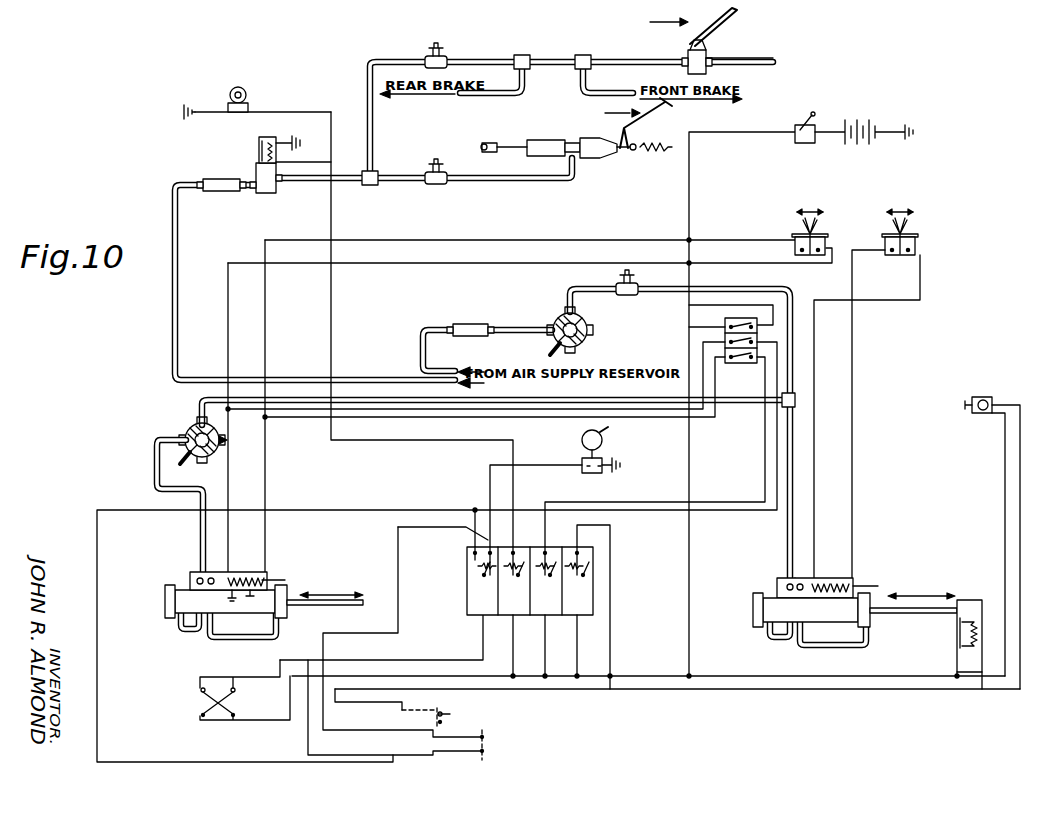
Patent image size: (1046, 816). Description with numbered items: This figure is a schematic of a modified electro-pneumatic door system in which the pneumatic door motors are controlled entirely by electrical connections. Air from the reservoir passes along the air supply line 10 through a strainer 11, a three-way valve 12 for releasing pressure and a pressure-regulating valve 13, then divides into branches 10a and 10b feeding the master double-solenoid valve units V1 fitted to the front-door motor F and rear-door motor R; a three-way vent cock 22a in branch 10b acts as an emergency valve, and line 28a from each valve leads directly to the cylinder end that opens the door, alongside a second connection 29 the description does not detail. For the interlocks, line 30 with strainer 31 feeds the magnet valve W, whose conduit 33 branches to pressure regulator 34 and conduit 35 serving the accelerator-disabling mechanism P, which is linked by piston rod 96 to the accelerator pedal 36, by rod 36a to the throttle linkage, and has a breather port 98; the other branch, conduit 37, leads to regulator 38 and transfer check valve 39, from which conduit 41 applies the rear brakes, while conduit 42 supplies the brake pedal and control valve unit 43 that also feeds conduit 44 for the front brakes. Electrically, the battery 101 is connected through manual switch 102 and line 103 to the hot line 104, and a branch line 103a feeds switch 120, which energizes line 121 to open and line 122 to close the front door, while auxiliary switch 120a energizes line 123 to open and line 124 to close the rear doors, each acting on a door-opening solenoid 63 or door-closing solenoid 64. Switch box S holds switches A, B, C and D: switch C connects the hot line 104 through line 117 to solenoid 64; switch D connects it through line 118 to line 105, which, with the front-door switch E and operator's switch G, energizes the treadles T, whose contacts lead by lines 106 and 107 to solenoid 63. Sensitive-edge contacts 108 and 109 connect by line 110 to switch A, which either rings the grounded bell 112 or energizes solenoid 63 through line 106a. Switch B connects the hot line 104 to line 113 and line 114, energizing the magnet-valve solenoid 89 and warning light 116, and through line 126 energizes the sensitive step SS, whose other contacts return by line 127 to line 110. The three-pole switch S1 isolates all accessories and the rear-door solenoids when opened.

The air supply line 10 is at (423, 344).
The branch line 10a is at (806, 464).
The branch line 10b is at (548, 414).
The strainer 11 is at (490, 326).
The three-way valve 12 is at (588, 345).
The pressure-regulating valve 13 is at (627, 297).
The three-way vent cock 22a is at (182, 424).
The line 28a is at (237, 636).
The pipe loop 29 is at (178, 632).
The line 30 is at (174, 278).
The strainer 31 is at (216, 178).
The conduit 33 is at (370, 187).
The pressure regulator 34 is at (436, 189).
The conduit 35 is at (544, 190).
The accelerator pedal 36 is at (662, 108).
The rod 36a is at (484, 150).
The conduit 37 is at (254, 166).
The regulator 38 is at (429, 48).
The transfer check valve 39 is at (523, 54).
The conduit 41 is at (523, 88).
The conduit 42 is at (740, 58).
The brake pedal and control valve unit 43 is at (732, 18).
The conduit 44 is at (593, 83).
The door-opening solenoid 63 is at (228, 572).
The door-closing solenoid 64 is at (266, 572).
The solenoid 89 is at (274, 138).
The piston rod 96 is at (622, 156).
The breather port 98 is at (600, 138).
The vehicle battery 101 is at (864, 122).
The manual switch 102 is at (803, 123).
The line 103 is at (697, 182).
The branch line 103a is at (724, 238).
The hot line 104 is at (632, 674).
The line 105 is at (858, 700).
The line 106 is at (330, 508).
The companion line 106a is at (462, 510).
The line 107 is at (236, 466).
The sensitive-edge contacts 108 is at (194, 704).
The sensitive-edge contacts 109 is at (196, 680).
The line 110 is at (390, 660).
The bell 112 is at (604, 437).
The line 113 is at (414, 446).
The line 114 is at (296, 142).
The warning light 116 is at (245, 100).
The line 117 is at (364, 420).
The line 118 is at (614, 607).
The switch 120 is at (922, 226).
The switch 120a is at (828, 230).
The line 121 is at (816, 396).
The line 122 is at (864, 334).
The line 123 is at (492, 268).
The line 124 is at (470, 240).
The line 126 is at (418, 542).
The line 127 is at (316, 739).
The magnet valve W is at (262, 195).
The accelerator-disabling mechanism P is at (548, 142).
The three-pole single-throw switch S1 is at (724, 321).
The switch box S is at (466, 586).
The single-pole double-throw switch A is at (466, 598).
The switch B is at (508, 614).
The switch C is at (539, 614).
The switch D is at (573, 612).
The rear-door motor R is at (168, 603).
The front-door motor F is at (756, 606).
The master double-solenoid-controlled valve unit V1 is at (188, 583).
The switch E is at (970, 606).
The switch G is at (978, 415).
The step treadle T is at (448, 714).
The sensitive step SS is at (484, 750).